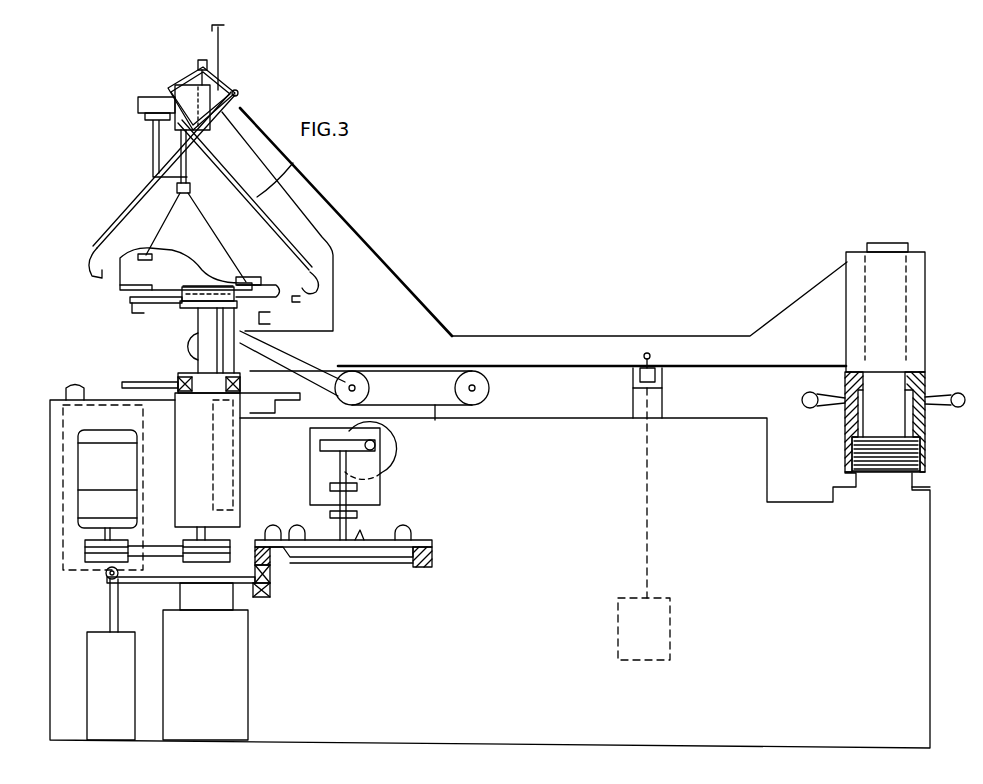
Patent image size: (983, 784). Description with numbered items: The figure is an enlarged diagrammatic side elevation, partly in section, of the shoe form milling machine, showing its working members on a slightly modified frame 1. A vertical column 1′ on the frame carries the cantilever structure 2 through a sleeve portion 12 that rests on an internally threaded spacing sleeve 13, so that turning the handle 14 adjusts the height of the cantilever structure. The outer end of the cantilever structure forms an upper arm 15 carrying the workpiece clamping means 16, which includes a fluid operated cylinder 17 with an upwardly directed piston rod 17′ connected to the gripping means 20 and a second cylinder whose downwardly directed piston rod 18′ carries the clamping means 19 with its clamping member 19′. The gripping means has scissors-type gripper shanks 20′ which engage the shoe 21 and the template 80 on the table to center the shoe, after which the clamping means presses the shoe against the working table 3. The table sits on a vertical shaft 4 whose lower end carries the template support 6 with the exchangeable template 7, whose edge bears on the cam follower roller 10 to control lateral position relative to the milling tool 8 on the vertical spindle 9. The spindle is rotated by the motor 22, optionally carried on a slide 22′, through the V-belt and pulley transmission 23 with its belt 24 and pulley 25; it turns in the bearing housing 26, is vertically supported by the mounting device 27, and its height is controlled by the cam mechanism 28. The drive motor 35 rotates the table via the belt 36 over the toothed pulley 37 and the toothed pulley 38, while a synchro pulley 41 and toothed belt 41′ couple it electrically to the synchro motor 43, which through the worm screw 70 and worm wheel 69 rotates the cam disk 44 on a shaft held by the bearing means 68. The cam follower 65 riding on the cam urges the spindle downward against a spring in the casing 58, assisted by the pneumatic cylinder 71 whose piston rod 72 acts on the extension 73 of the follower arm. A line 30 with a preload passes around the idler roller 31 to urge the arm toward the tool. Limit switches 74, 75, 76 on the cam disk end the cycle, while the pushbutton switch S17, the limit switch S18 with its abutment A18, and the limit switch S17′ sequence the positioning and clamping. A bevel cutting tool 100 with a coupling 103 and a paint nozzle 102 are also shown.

The frame 1 is at (912, 558).
The vertical column 1′ is at (885, 243).
The cantilever structure 2 is at (606, 337).
The working table 3 is at (269, 317).
The vertical shaft 4 is at (228, 283).
The template support 6 is at (265, 372).
The exchangeable template 7 is at (270, 400).
The milling tool 8 is at (216, 284).
The vertical spindle 9 is at (198, 338).
The cam follower roller 10 is at (152, 384).
The sleeve portion 12 is at (915, 312).
The spacing sleeve 13 is at (918, 382).
The handle 14 is at (958, 408).
The upper arm 15 is at (318, 184).
The workpiece clamping means 16 is at (165, 98).
The fluid operated cylinder 17 is at (239, 98).
The piston rod 17′ is at (188, 76).
The piston rod 18′ is at (188, 178).
The clamping means 19 is at (205, 217).
The clamping member 19′ is at (148, 253).
The gripping means 20 is at (228, 82).
The gripper shanks 20′ is at (278, 178).
The shoe 21 is at (205, 270).
The motor 22 is at (80, 483).
The slide 22′ is at (65, 575).
The V-belt and pulley transmission 23 is at (72, 590).
The belt 24 is at (150, 582).
The pulley 25 is at (190, 545).
The bearing housing 26 is at (172, 415).
The mounting device 27 is at (238, 600).
The cam mechanism 28 is at (343, 539).
The line 30 is at (640, 448).
The idler roller 31 is at (662, 380).
The drive motor 35 is at (362, 356).
The belt 36 is at (326, 392).
The toothed pulley 37 is at (370, 388).
The toothed pulley 38 is at (190, 348).
The toothed pulley 41 is at (435, 421).
The toothed belt 41′ is at (472, 406).
The synchro motor 43 is at (385, 443).
The cam disk 44 is at (423, 545).
The casing 58 is at (248, 673).
The cam follower 65 is at (272, 596).
The bearing means 68 is at (330, 514).
The worm wheel 69 is at (322, 444).
The worm screw 70 is at (388, 466).
The pneumatic cylinder 71 is at (92, 665).
The piston rod 72 is at (109, 604).
The extension 73 is at (170, 584).
The limit switch 74 is at (263, 526).
The limit switch 75 is at (309, 529).
The limit switch 76 is at (405, 532).
The template 80 is at (140, 310).
The bevel cutting tool 100 is at (248, 278).
The nozzle 102 is at (262, 342).
The coupling 103 is at (240, 464).
The abutment A18 is at (221, 32).
The pushbutton switch S17 is at (70, 386).
The limit switch S17′ is at (146, 118).
The limit switch S18 is at (244, 102).